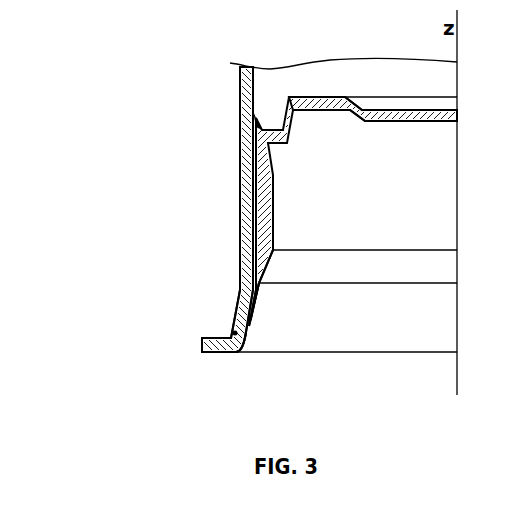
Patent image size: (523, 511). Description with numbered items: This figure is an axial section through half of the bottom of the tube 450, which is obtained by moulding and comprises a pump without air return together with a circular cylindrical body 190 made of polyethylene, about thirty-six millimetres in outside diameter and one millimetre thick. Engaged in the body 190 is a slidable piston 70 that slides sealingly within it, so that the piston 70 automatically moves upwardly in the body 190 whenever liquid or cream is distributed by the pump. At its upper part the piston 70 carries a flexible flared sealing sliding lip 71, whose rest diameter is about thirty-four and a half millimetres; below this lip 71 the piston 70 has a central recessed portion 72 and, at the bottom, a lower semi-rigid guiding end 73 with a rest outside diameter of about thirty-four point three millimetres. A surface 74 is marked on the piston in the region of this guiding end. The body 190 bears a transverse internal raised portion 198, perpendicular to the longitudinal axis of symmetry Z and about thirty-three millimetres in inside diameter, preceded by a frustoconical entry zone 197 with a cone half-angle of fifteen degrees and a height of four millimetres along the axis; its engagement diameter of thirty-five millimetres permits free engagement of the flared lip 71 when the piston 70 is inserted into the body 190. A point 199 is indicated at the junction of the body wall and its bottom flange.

The slidable piston 70 is at (409, 130).
The flexible flared sealing sliding lip 71 is at (262, 118).
The central recessed portion 72 is at (270, 193).
The lower semi-rigid guiding end 73 is at (267, 265).
The lower surface 74 is at (262, 275).
The circular cylindrical body 190 is at (249, 160).
The frustoconical entry zone 197 is at (250, 318).
The transverse internal raised portion 198 is at (256, 286).
The weld point 199 is at (235, 333).
The tube 450 is at (232, 216).